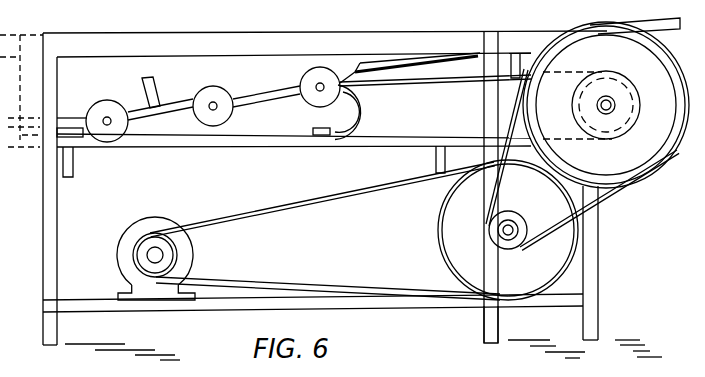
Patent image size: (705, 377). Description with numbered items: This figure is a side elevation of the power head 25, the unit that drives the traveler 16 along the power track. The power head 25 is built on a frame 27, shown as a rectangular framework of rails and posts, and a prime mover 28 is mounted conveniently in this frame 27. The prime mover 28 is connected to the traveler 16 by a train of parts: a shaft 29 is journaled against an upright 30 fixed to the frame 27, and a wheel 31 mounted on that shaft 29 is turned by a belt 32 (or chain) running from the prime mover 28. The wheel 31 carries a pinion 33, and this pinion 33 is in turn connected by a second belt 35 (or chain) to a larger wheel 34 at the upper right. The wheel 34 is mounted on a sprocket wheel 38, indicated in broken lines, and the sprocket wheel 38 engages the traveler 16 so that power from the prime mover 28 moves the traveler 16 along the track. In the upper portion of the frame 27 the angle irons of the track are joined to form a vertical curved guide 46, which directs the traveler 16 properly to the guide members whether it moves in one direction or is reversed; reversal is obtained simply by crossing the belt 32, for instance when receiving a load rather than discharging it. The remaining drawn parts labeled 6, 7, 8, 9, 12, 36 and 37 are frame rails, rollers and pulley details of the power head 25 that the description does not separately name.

The top frame rail 6 is at (197, 43).
The conveyor support rail 7 is at (180, 152).
The conveyor flight 8 is at (170, 110).
The conveyor rail 9 is at (208, 142).
The conveyor roller 12 is at (95, 100).
The traveler 16 is at (380, 143).
The vertical curved guide 46 is at (357, 115).
The power head 25 is at (327, 202).
The frame 27 is at (240, 313).
The prime mover 28 is at (192, 260).
The shaft 29 is at (511, 222).
The upright 30 is at (492, 322).
The wheel 31 is at (508, 230).
The belt 32 is at (352, 285).
The pinion 33 is at (501, 241).
The wheel 34 is at (660, 148).
The belt 35 is at (587, 136).
The inner pulley 36 is at (614, 102).
The post 37 is at (593, 283).
The sprocket wheel 38 is at (604, 72).